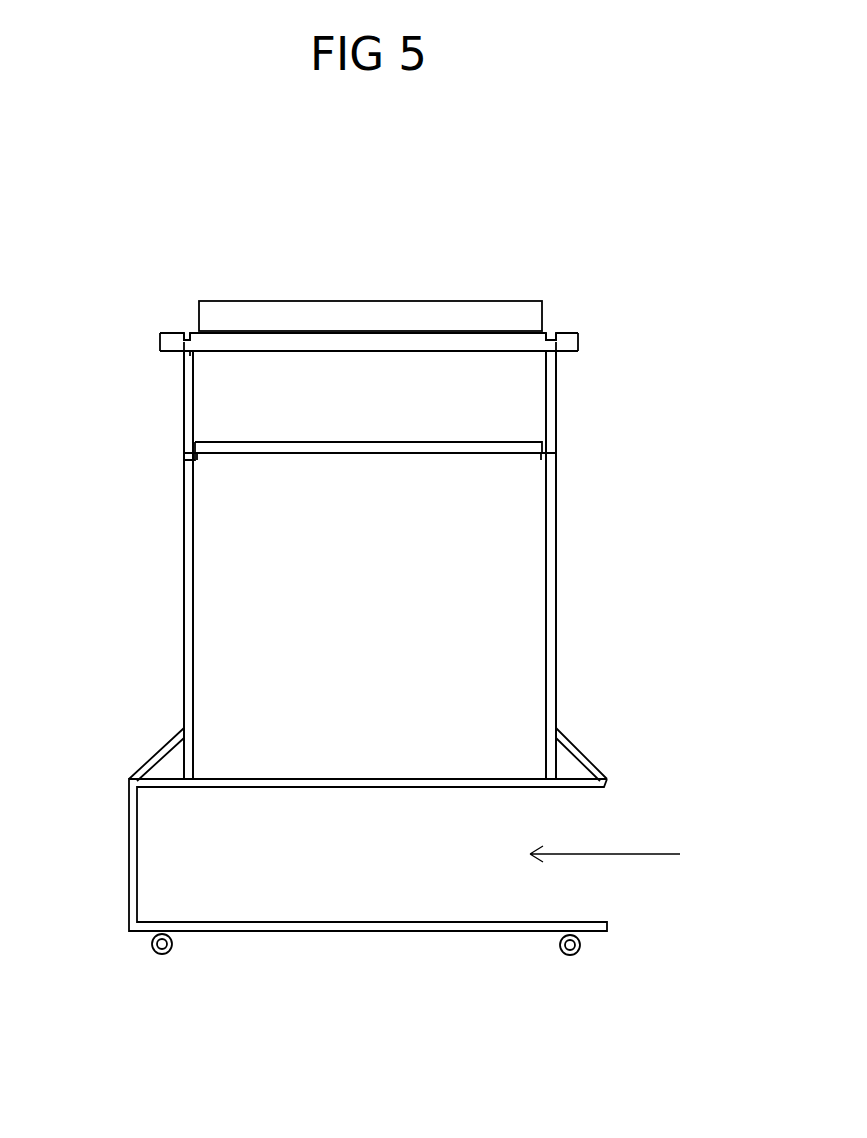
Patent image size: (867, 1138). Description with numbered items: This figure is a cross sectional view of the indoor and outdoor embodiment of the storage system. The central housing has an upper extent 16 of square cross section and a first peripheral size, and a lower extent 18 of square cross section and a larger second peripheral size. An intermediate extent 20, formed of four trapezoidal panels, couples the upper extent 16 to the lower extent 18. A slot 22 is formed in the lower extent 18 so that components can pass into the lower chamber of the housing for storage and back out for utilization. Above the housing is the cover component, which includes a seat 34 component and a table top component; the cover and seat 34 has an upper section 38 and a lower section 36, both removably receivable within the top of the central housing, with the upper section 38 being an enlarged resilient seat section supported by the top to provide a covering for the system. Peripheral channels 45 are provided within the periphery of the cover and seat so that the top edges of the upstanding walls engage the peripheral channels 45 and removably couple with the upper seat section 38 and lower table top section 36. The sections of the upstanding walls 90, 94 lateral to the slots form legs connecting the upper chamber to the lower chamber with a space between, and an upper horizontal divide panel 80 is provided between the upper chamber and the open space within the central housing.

The upper extent 16 is at (185, 422).
The lower extent 18 is at (125, 842).
The intermediate extent 20 is at (152, 753).
The slot 22 is at (634, 853).
The seat 34 is at (582, 340).
The lower section 36 is at (435, 362).
The upper section 38 is at (505, 308).
The peripheral channels 45 is at (188, 330).
The upper horizontal divide panel 80 is at (463, 450).
The upstanding wall 90 is at (558, 592).
The upstanding wall 94 is at (182, 588).